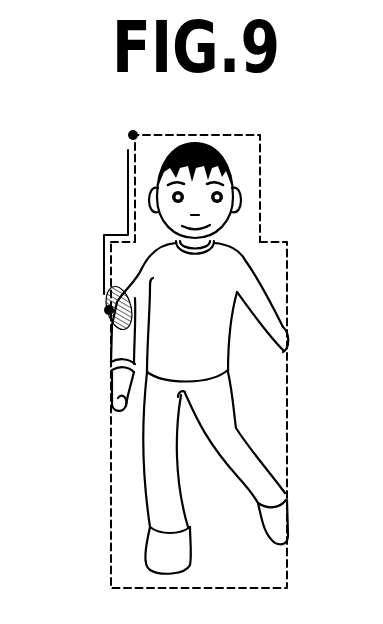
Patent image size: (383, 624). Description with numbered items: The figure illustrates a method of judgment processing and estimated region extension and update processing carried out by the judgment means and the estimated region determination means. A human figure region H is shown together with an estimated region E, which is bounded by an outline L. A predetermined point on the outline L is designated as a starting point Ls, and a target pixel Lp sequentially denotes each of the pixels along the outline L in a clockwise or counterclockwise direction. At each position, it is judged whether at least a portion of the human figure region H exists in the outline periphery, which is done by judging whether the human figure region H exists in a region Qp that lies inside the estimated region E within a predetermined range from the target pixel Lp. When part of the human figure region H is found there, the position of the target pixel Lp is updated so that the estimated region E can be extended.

The starting point Ls is at (130, 135).
The estimated region E is at (232, 152).
The human figure region H is at (224, 263).
The region inside the estimated region Qp is at (104, 292).
The target pixel Lp is at (108, 310).
The outline L is at (288, 263).